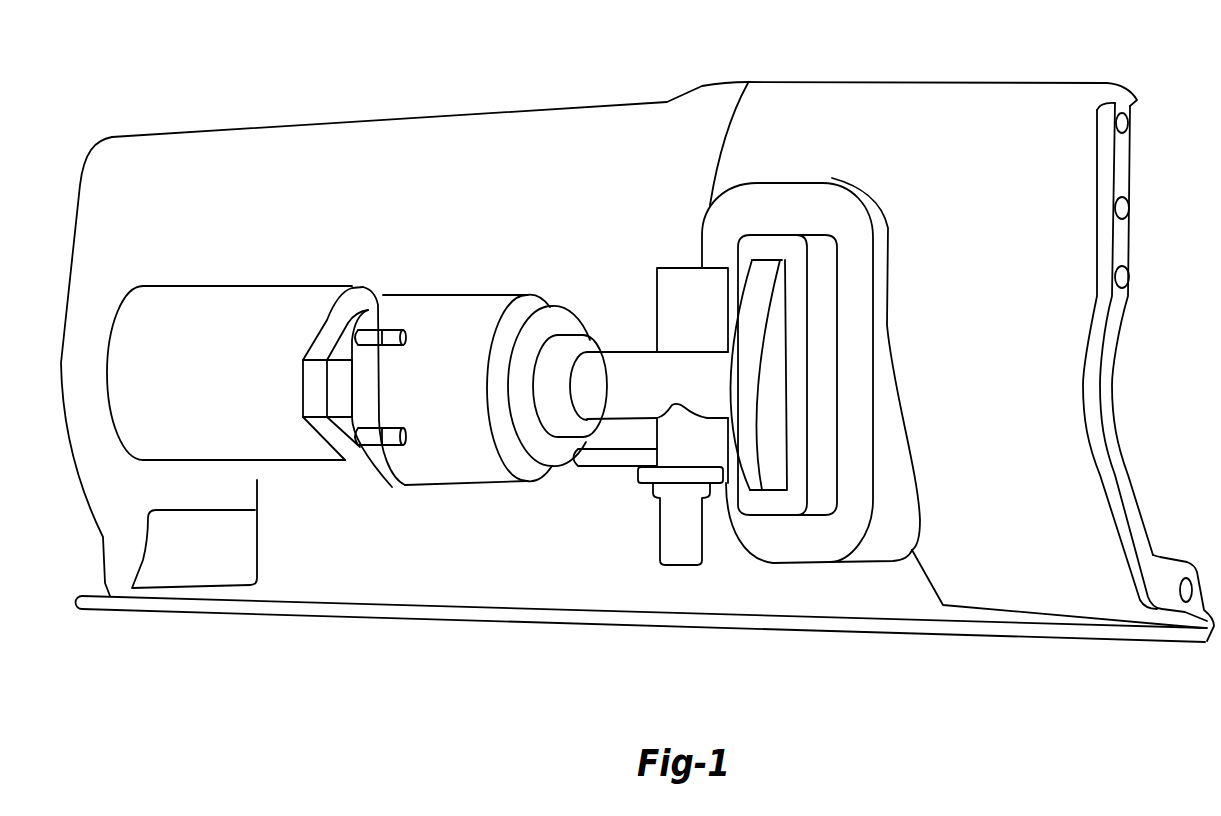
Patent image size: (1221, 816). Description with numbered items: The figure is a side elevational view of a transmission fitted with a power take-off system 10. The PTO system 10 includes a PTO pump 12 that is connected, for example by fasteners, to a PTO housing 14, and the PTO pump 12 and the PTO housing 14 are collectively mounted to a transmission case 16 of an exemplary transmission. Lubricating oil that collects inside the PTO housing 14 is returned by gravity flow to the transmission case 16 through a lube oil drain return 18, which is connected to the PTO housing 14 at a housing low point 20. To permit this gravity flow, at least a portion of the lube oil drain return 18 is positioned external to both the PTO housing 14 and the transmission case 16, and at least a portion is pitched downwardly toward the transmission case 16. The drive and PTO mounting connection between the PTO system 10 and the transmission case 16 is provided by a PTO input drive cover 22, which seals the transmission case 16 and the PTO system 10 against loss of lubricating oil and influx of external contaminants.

The PTO system 10 is at (905, 68).
The PTO pump 12 is at (214, 304).
The PTO housing 14 is at (448, 302).
The transmission case 16 is at (377, 572).
The lube oil drain return 18 is at (605, 465).
The housing low point 20 is at (447, 481).
The PTO input drive cover 22 is at (755, 295).